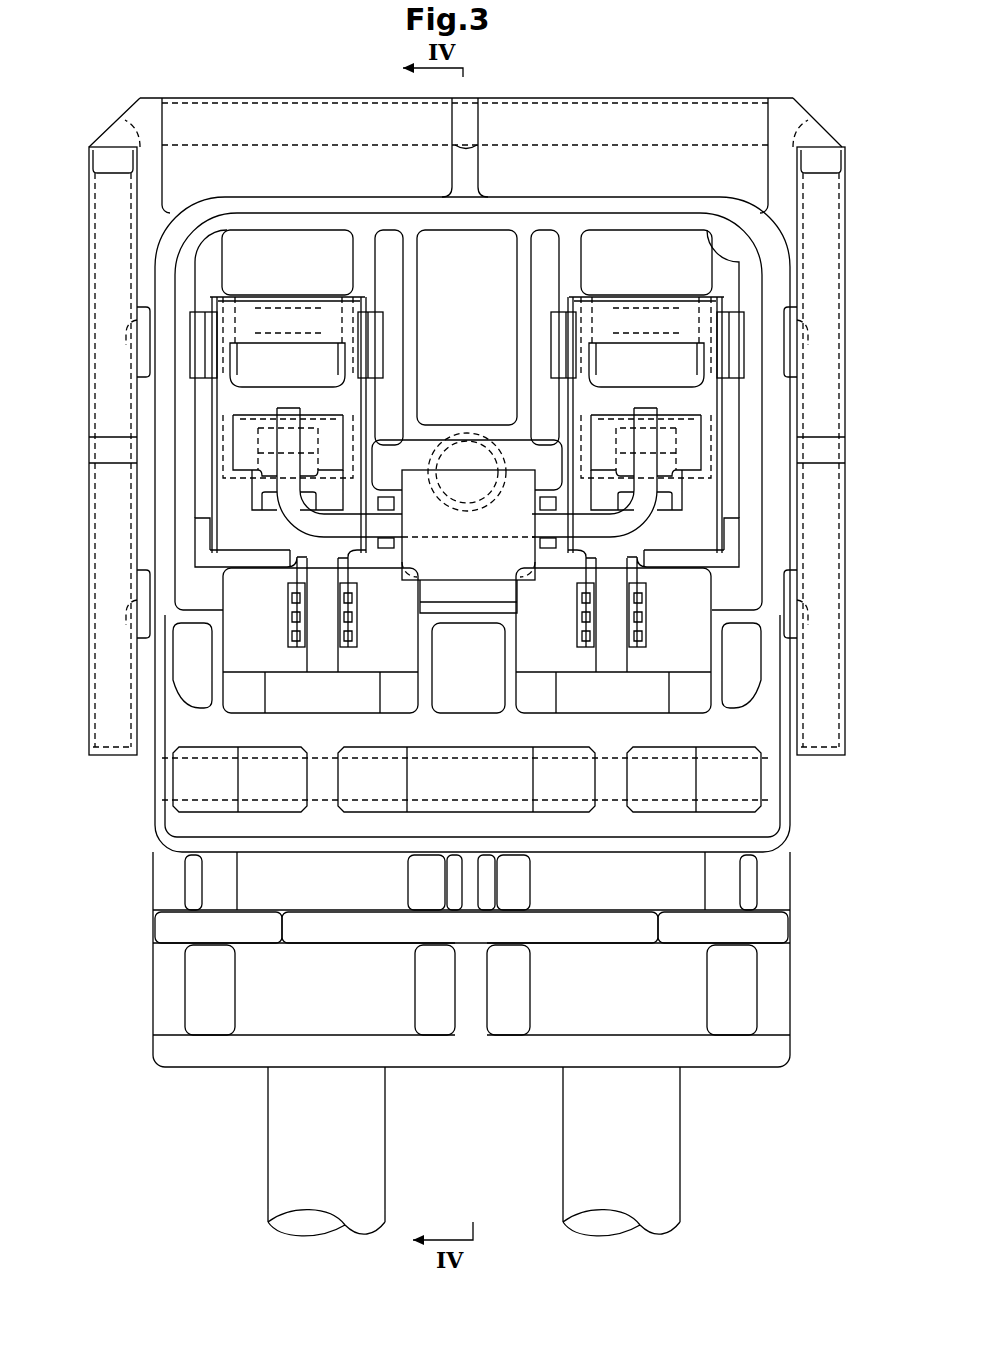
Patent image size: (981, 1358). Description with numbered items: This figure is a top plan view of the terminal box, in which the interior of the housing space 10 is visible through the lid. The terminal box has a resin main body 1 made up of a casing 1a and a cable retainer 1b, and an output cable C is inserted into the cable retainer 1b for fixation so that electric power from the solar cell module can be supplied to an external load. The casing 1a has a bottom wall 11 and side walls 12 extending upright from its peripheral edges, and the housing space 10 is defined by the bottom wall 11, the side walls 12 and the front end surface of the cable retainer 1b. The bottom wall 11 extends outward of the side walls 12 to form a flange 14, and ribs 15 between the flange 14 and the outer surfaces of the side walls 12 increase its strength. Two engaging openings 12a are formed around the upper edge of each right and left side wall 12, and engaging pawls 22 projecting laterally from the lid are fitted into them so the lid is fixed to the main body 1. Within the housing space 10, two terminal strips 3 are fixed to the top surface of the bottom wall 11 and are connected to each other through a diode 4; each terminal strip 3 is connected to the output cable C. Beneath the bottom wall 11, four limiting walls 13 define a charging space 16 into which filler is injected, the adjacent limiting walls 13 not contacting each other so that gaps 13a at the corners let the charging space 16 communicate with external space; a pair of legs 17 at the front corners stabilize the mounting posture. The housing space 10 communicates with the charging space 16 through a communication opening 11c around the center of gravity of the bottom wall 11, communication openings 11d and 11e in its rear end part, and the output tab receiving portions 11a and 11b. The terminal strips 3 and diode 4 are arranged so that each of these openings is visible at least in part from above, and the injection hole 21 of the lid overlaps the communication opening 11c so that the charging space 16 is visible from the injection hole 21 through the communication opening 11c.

The main body 1 is at (430, 591).
The casing 1a is at (108, 110).
The cable retainer 1b is at (150, 1055).
The terminal strip 3 is at (295, 305).
The diode 4 is at (478, 570).
The housing space 10 is at (723, 255).
The bottom wall 11 is at (388, 250).
The output tab receiving portion 11a is at (703, 257).
The output tab receiving portion 11b is at (228, 262).
The communication opening 11c is at (418, 452).
The communication opening 11d is at (696, 655).
The communication opening 11e is at (225, 643).
The side wall 12 is at (565, 200).
The engaging opening 12a is at (132, 322).
The limiting wall 13 is at (100, 232).
The gap 13a is at (150, 158).
The flange 14 is at (313, 167).
The rib 15 is at (165, 112).
The charging space 16 is at (545, 735).
The leg 17 is at (111, 128).
The injection hole 21 is at (473, 455).
The engaging pawl 22 is at (143, 332).
The output cable C is at (275, 1172).